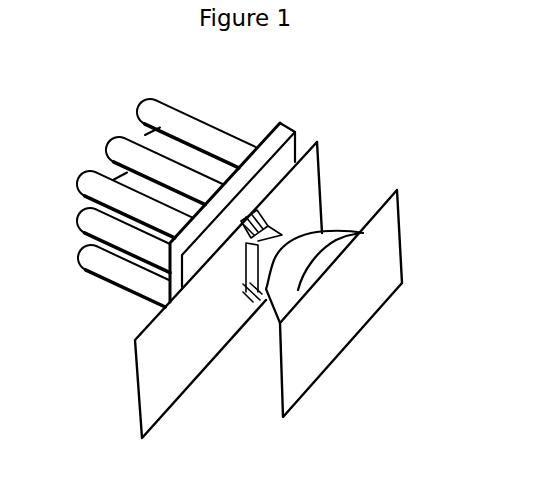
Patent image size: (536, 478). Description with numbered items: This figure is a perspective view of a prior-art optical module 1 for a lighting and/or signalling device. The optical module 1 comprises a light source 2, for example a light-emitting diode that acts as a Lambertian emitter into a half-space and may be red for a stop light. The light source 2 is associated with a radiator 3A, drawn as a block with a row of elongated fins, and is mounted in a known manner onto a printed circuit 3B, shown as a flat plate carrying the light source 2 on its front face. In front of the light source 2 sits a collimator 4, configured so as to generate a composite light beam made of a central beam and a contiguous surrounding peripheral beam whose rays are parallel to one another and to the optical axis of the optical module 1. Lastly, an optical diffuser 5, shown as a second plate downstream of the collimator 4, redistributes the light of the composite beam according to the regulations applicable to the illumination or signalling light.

The optical module 1 is at (370, 110).
The light source 2 is at (248, 295).
The radiator 3A is at (177, 124).
The printed circuit 3B is at (320, 153).
The collimator 4 is at (298, 247).
The optical diffuser 5 is at (387, 223).